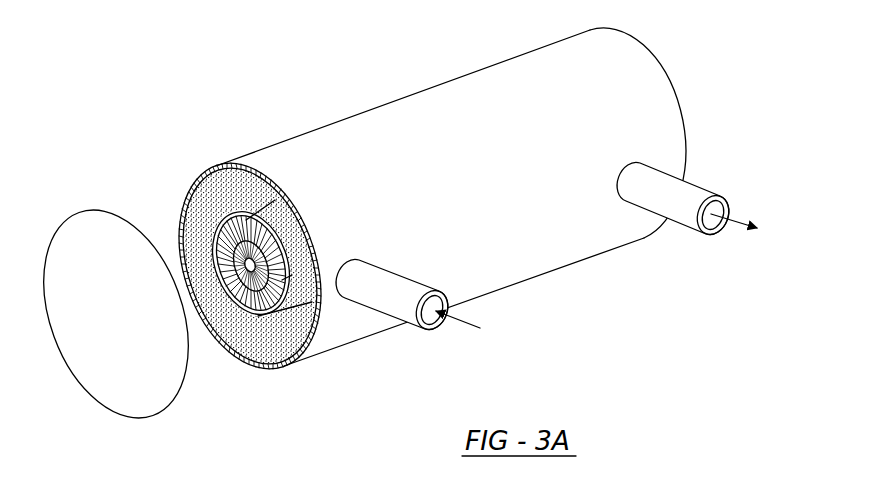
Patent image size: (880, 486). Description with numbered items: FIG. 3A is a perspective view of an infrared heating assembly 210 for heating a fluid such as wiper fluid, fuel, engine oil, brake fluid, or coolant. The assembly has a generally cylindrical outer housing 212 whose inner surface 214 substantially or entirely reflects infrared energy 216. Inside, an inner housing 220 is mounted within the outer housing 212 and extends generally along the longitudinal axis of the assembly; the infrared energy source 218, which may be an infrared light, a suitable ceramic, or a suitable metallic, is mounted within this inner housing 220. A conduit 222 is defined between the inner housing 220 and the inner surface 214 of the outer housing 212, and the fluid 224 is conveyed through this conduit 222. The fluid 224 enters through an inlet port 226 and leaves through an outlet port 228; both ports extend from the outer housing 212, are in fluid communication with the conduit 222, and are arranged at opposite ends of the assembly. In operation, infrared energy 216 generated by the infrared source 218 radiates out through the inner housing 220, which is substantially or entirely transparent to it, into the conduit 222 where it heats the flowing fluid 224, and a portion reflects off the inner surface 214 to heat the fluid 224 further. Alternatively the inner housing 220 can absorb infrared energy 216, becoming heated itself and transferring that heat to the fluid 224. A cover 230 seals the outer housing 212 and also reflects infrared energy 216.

The infrared heating assembly 210 is at (160, 147).
The outer housing 212 is at (602, 68).
The inner surface 214 is at (280, 364).
The infrared energy 216 is at (225, 313).
The infrared energy source 218 is at (256, 316).
The inner housing 220 is at (255, 205).
The conduit 222 is at (183, 210).
The fluid 224 is at (228, 180).
The inlet port 226 is at (445, 293).
The outlet port 228 is at (712, 231).
The cover 230 is at (133, 360).